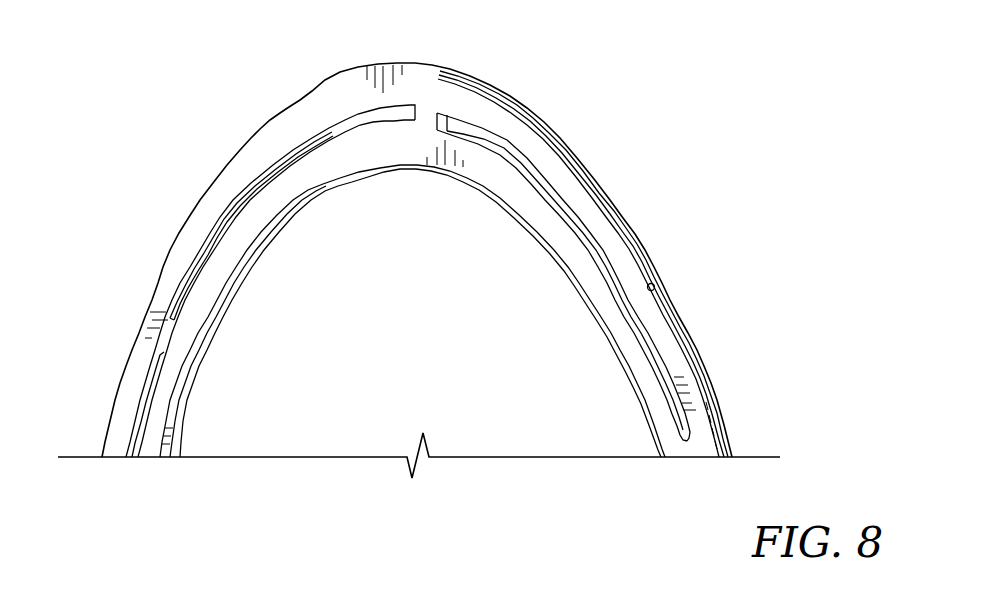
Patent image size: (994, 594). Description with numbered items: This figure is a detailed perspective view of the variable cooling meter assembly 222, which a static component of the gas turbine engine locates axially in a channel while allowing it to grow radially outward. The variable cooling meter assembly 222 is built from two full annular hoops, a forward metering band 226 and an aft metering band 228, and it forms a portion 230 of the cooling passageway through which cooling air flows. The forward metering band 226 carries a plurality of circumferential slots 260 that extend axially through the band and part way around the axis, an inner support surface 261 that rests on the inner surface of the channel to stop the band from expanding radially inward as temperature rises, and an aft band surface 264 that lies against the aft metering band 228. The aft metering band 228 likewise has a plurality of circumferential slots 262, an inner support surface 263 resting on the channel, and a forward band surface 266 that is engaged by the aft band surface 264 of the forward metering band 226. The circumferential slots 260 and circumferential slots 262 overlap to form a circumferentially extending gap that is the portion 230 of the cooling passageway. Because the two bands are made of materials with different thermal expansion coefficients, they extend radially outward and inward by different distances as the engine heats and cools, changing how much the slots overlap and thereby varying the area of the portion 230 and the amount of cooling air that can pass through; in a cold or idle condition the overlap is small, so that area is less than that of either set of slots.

The variable cooling meter assembly 222 is at (622, 105).
The forward metering band 226 is at (268, 150).
The aft metering band 228 is at (522, 96).
The portion of the cooling passageway 230 is at (243, 263).
The circumferential slots of the forward metering band 260 is at (166, 351).
The inner support surface of the forward metering band 261 is at (270, 230).
The circumferential slots of the aft metering band 262 is at (158, 375).
The inner support surface of the aft metering band 263 is at (221, 238).
The aft band surface 264 is at (695, 357).
The forward band surface 266 is at (656, 287).